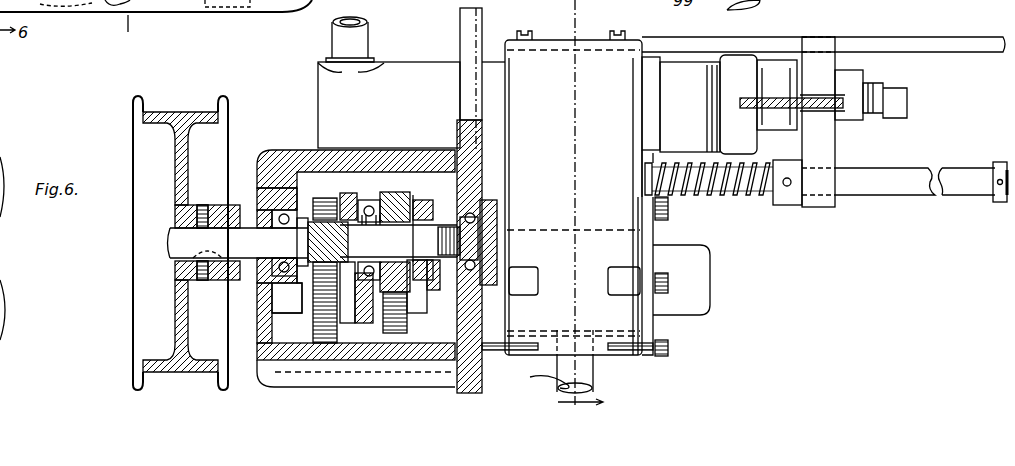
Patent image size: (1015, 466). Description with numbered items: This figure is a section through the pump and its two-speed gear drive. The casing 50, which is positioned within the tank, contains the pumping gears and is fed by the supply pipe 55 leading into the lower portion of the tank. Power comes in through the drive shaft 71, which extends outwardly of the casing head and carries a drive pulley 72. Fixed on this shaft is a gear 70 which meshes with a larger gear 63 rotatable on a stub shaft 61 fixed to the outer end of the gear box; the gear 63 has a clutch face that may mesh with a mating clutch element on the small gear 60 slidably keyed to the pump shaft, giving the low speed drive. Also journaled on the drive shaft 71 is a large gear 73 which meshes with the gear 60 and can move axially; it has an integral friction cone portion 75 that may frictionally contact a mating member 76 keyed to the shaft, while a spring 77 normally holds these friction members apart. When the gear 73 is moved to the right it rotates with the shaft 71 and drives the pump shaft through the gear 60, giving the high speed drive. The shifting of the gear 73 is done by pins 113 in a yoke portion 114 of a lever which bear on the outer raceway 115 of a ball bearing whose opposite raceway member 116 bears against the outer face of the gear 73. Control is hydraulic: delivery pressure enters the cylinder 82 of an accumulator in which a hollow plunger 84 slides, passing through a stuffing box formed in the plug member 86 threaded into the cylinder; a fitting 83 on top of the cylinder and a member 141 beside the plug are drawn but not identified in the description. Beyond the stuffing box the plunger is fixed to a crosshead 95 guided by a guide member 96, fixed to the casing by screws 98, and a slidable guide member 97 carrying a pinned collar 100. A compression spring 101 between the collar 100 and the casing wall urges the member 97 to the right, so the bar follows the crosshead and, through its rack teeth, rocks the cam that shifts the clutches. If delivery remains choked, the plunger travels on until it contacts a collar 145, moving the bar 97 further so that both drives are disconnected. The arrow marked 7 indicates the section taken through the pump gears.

The section line arrow 7 is at (589, 397).
The casing 50 is at (596, 202).
The supply pipe 55 is at (100, 3).
The small gear 60 is at (403, 323).
The stub shaft 61 is at (300, 284).
The larger gear 63 is at (328, 317).
The gear 70 is at (320, 218).
The drive shaft 71 is at (238, 243).
The drive pulley 72 is at (148, 335).
The large gear 73 is at (412, 204).
The friction cone portion 75 is at (413, 197).
The mating member 76 is at (432, 210).
The spring 77 is at (409, 240).
The cylinder 82 is at (402, 82).
The cylinder 83 is at (358, 36).
The plunger 84 is at (767, 98).
The plug member 86 is at (690, 107).
The crosshead 95 is at (820, 143).
The guide member 96 is at (879, 45).
The guide member 97 is at (912, 177).
The screws 98 is at (527, 30).
The collar 100 is at (788, 205).
The compression spring 101 is at (733, 199).
The pins 113 is at (372, 203).
The yoke portion 114 is at (340, 199).
The outer raceway 115 is at (372, 203).
The raceway member 116 is at (380, 210).
The housing 141 is at (777, 113).
The collar 145 is at (1002, 162).